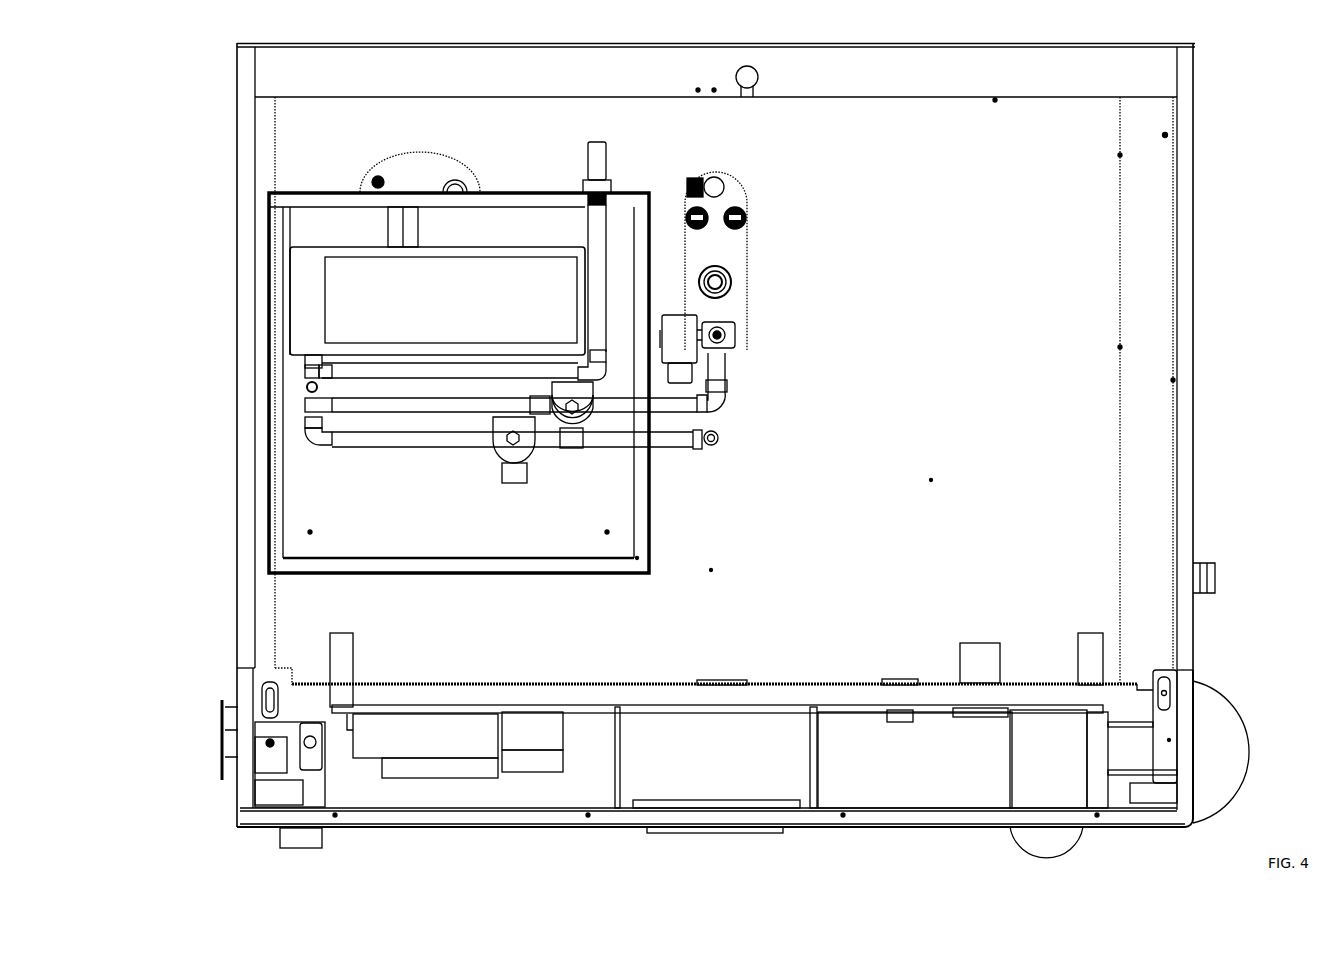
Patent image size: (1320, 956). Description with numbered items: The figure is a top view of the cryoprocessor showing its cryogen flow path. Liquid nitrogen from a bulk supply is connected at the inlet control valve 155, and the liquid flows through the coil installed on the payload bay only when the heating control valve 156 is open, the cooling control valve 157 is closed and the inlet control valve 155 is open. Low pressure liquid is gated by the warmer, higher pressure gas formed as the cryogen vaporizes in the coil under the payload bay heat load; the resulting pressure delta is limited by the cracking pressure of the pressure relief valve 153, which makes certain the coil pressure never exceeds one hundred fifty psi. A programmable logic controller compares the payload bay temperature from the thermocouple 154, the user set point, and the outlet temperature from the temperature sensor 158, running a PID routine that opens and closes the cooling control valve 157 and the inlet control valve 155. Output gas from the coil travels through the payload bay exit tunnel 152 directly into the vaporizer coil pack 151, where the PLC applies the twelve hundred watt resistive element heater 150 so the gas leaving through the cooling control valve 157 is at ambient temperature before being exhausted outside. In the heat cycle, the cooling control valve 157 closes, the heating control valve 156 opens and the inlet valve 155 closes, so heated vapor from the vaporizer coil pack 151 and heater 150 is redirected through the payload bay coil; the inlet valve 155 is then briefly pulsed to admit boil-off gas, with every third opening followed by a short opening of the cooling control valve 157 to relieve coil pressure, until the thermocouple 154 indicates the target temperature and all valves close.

The resistive element heater 150 is at (322, 312).
The vaporizer coil pack 151 is at (313, 240).
The payload bay exit tunnel 152 is at (422, 224).
The pressure relief valve 153 is at (610, 163).
The thermocouple 154 is at (750, 220).
The inlet control valve 155 is at (737, 323).
The heating control valve 156 is at (595, 423).
The cooling control valve 157 is at (535, 460).
The outlet temperature sensor 158 is at (303, 382).